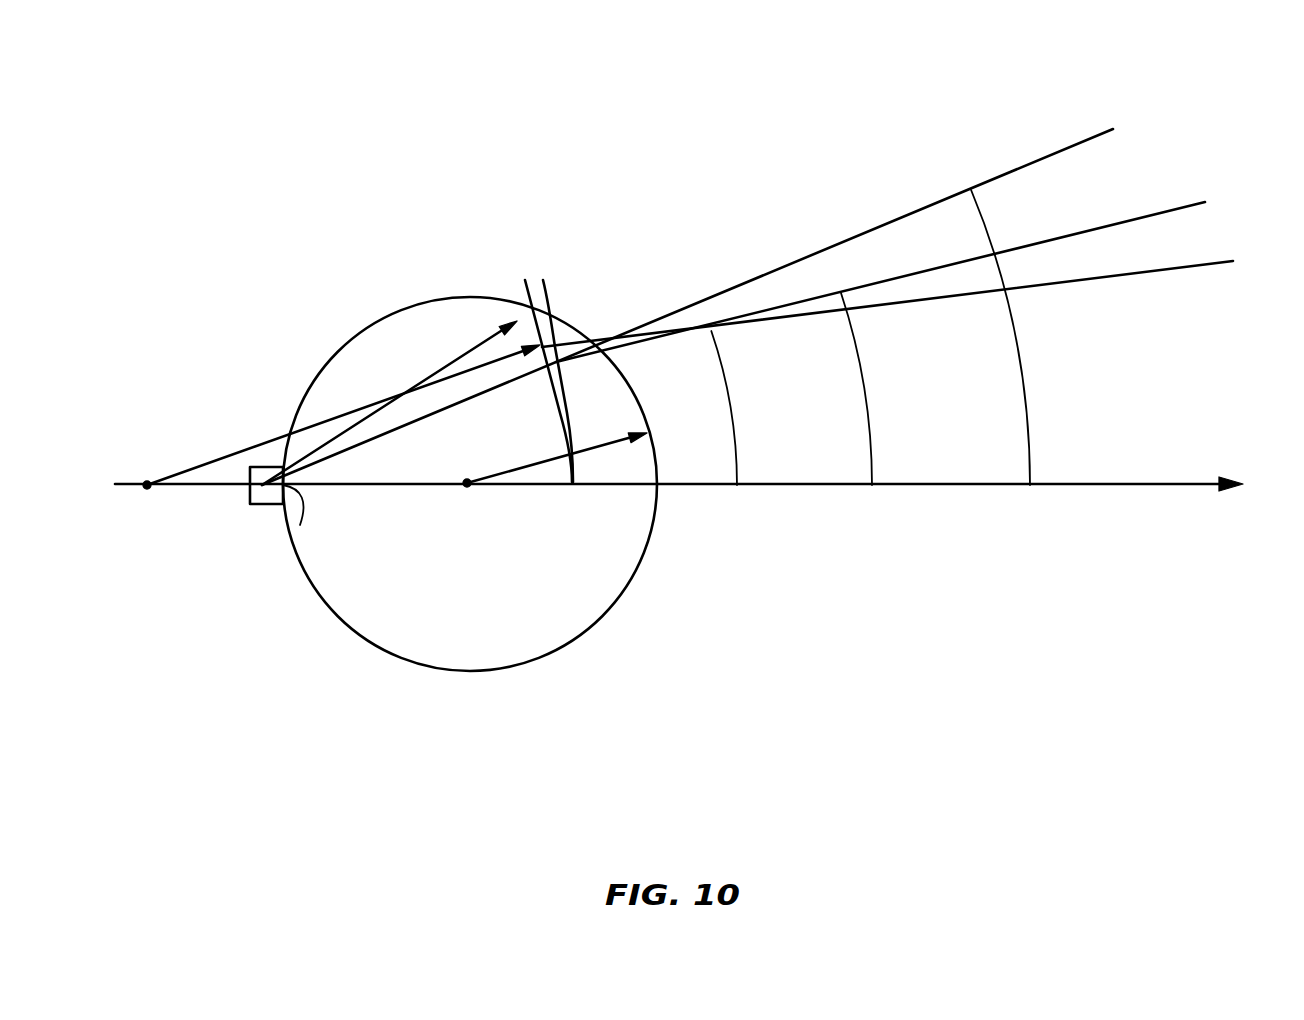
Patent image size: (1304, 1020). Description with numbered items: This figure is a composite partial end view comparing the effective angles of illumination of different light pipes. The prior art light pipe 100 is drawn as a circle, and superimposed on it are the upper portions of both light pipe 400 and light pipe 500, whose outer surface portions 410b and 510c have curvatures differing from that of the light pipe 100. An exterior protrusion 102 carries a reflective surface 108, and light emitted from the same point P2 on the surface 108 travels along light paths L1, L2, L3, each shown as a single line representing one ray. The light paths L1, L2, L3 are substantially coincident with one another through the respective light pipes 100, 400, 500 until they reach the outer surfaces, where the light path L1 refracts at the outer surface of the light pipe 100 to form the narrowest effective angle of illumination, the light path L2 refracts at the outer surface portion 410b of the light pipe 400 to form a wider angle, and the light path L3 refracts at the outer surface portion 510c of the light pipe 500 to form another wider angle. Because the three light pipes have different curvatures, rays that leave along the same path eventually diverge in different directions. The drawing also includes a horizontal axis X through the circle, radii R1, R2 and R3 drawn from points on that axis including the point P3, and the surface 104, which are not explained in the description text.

The light pipe 100 is at (447, 294).
The light pipe 400 is at (525, 280).
The outer surface portion 410b is at (543, 280).
The light pipe 500 is at (562, 335).
The outer surface portion 510c is at (588, 332).
The lens surface 104 is at (608, 337).
The radius of spherical lens R1 is at (527, 466).
The radius of first surface R2 is at (462, 352).
The radius of second surface R3 is at (340, 413).
The exterior protrusion 102 is at (263, 467).
The point P3 is at (133, 464).
The reflective surface 108 is at (300, 518).
The point P2 is at (287, 485).
The light path L1 is at (817, 314).
The light path L2 is at (963, 262).
The light path L3 is at (885, 222).
The optical axis X is at (700, 480).